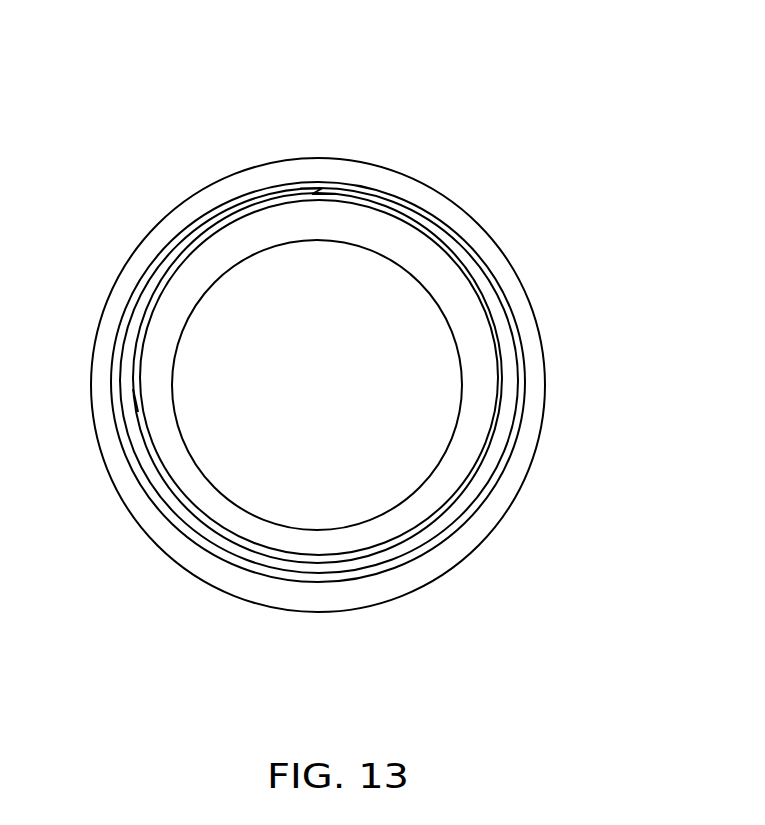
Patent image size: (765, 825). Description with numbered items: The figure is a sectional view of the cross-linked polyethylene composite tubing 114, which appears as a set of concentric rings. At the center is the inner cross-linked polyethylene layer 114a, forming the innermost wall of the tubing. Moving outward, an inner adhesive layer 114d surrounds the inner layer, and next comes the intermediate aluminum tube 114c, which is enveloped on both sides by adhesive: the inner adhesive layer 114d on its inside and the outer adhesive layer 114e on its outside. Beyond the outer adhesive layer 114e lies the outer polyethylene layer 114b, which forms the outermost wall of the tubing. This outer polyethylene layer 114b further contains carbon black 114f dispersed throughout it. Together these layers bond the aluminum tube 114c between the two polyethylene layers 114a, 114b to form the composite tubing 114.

The cross-linked polyethylene composite tubing 114 is at (495, 197).
The inner cross-linked polyethylene layer 114a is at (485, 375).
The outer polyethylene layer 114b is at (502, 500).
The intermediate aluminum tube 114c is at (208, 225).
The inner adhesive layer 114d is at (134, 413).
The outer adhesive layer 114e is at (133, 297).
The carbon black 114f is at (537, 407).